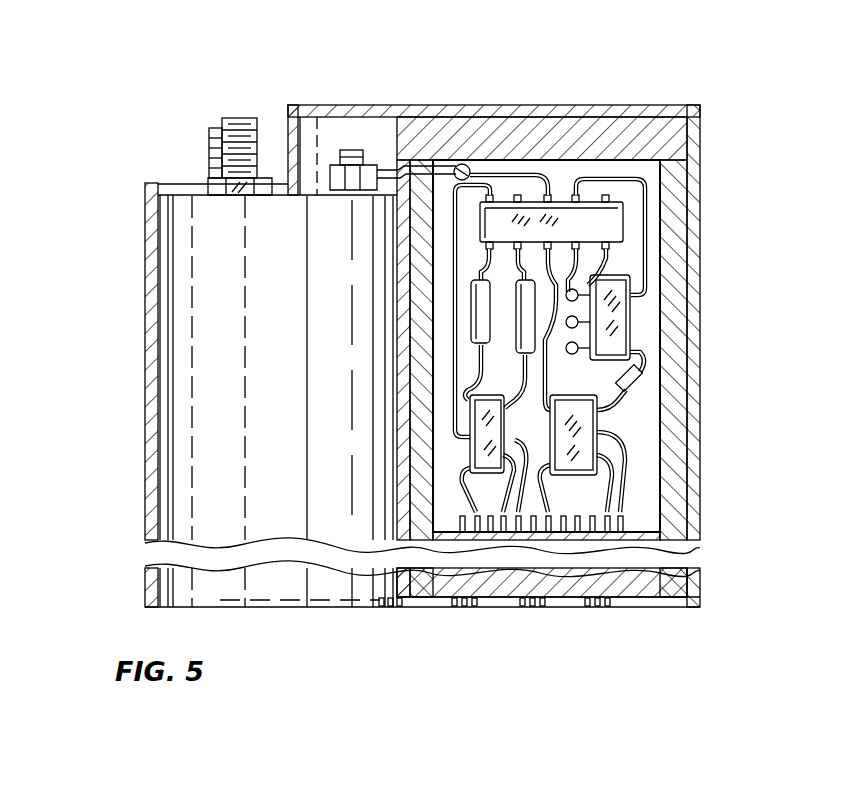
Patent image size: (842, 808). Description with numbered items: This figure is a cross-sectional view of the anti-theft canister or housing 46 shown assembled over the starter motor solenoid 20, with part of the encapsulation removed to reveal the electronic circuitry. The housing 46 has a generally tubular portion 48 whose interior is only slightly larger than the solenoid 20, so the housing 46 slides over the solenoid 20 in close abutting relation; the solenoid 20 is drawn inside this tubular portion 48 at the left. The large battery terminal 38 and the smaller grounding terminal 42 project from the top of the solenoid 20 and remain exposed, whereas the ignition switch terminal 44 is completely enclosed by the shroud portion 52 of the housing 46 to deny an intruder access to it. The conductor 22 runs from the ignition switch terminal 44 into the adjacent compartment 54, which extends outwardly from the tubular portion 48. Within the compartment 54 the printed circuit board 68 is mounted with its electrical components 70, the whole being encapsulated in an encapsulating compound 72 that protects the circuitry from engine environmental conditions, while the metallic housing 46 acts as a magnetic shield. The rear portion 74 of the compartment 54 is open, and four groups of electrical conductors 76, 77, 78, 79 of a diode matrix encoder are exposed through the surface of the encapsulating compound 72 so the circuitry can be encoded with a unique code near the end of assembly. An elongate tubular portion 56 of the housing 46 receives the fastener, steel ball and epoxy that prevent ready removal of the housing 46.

The solenoid 20 is at (186, 290).
The conductor 22 is at (422, 168).
The terminal 38 is at (236, 116).
The grounding terminal 42 is at (212, 155).
The ignition switch terminal 44 is at (350, 162).
The housing 46 is at (145, 222).
The tubular portion 48 is at (407, 515).
The shroud portion 52 is at (328, 104).
The compartment 54 is at (510, 130).
The elongate tubular portion 56 is at (190, 395).
The printed circuit board 68 is at (433, 343).
The electrical components 70 is at (492, 218).
The encapsulating compound 72 is at (431, 440).
The rear portion 74 is at (698, 609).
The conductor group 76 is at (388, 612).
The conductor group 77 is at (465, 612).
The conductor group 78 is at (540, 612).
The conductor group 79 is at (604, 612).